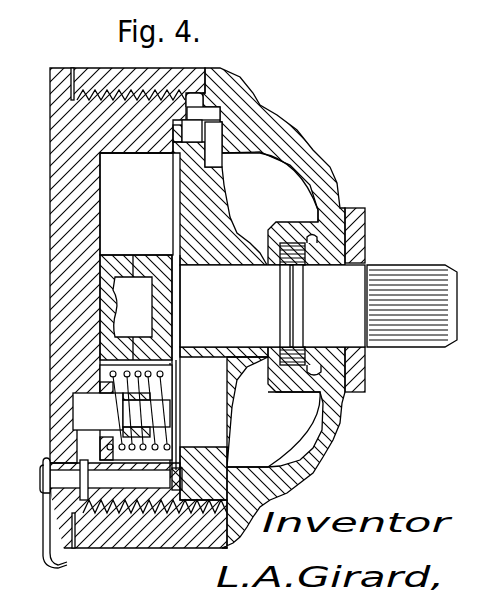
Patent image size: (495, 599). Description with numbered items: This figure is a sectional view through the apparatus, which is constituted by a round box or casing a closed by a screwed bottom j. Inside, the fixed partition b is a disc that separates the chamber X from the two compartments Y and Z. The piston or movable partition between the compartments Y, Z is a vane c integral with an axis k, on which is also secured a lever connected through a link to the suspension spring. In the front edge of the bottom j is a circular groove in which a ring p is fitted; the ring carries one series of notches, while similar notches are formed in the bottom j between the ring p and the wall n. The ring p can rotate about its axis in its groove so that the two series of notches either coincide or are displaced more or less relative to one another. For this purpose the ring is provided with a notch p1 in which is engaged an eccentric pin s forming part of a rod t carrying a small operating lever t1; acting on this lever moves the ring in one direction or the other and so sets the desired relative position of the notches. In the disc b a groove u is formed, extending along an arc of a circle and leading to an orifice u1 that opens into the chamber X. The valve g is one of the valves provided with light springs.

The screwed bottom j is at (80, 137).
The round box or casing a is at (290, 138).
The fixed partition b is at (212, 213).
The ring p is at (176, 140).
The groove u is at (190, 133).
The orifice u1 is at (215, 157).
The wall n is at (137, 153).
The compartment Y is at (136, 204).
The vane c is at (152, 258).
The axis k is at (318, 306).
The chamber X is at (271, 310).
The valve g is at (177, 403).
The eccentric pin s is at (176, 466).
The compartment Z is at (110, 367).
The rod t is at (130, 478).
The small operating lever t1 is at (53, 564).
The notch p1 is at (182, 472).